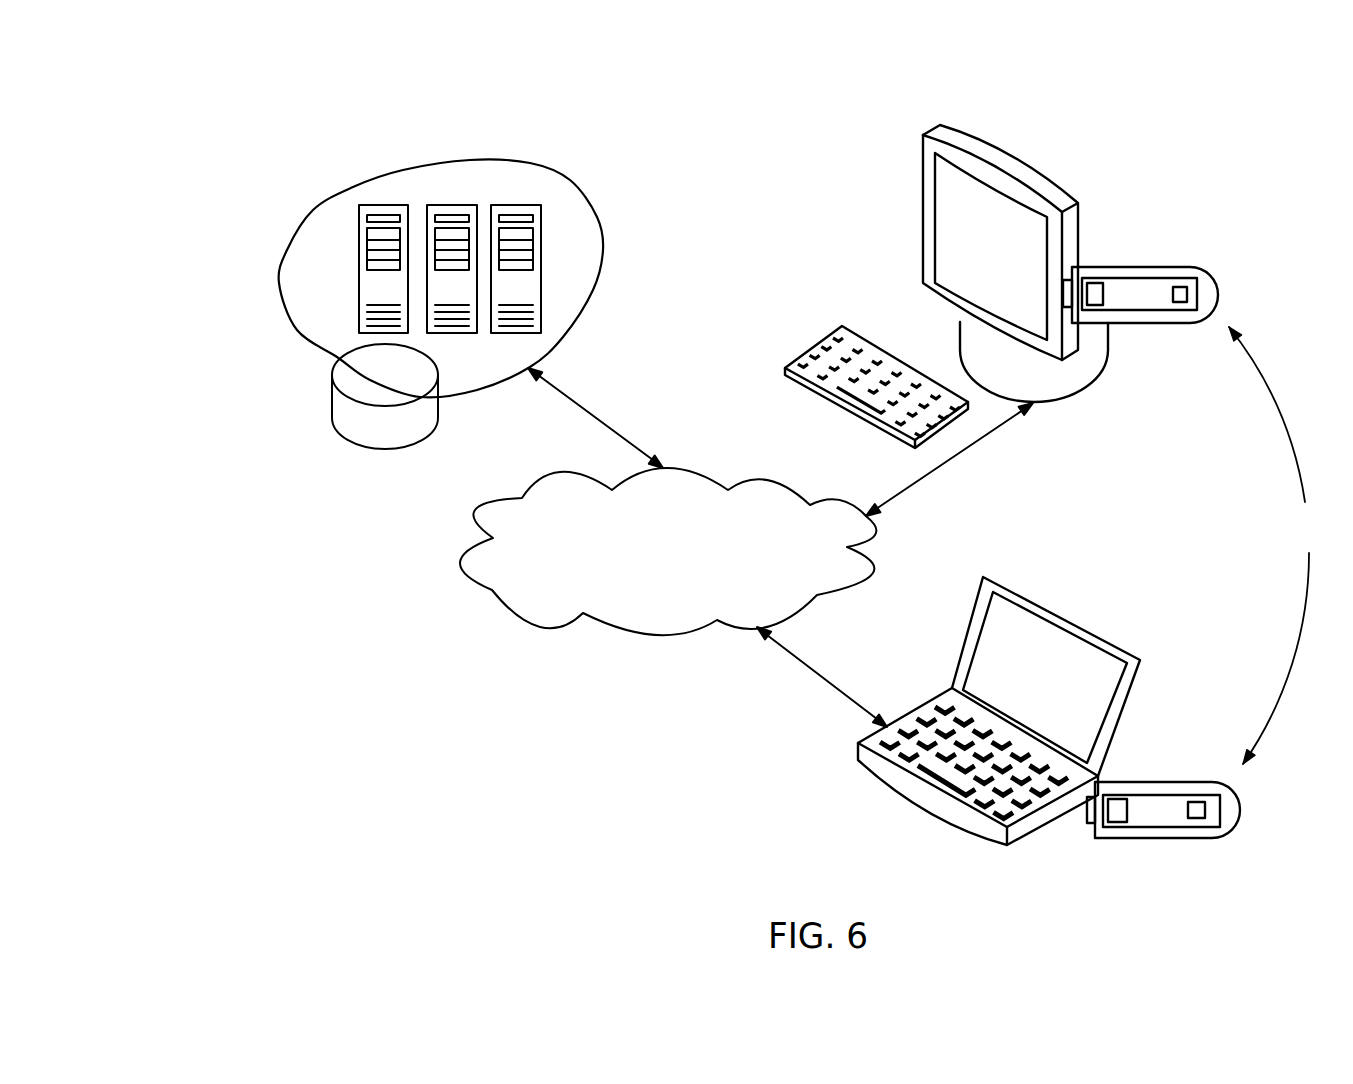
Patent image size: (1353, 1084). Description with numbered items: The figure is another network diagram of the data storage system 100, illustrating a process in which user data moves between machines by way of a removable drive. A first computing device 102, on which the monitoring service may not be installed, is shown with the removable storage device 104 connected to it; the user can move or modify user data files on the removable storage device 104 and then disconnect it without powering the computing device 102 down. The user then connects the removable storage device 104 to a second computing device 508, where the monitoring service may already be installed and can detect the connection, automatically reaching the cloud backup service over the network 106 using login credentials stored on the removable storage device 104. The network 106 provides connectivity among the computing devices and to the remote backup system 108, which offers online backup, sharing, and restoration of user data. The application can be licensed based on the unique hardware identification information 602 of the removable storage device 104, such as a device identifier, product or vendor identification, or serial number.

The data storage system 100 is at (212, 78).
The computing device 102 is at (918, 108).
The removable storage device 104 is at (1275, 545).
The network 106 is at (691, 559).
The remote backup system 108 is at (283, 225).
The second computing device 508 is at (1058, 575).
The unique hardware identification (ID) information 602 is at (1181, 292).